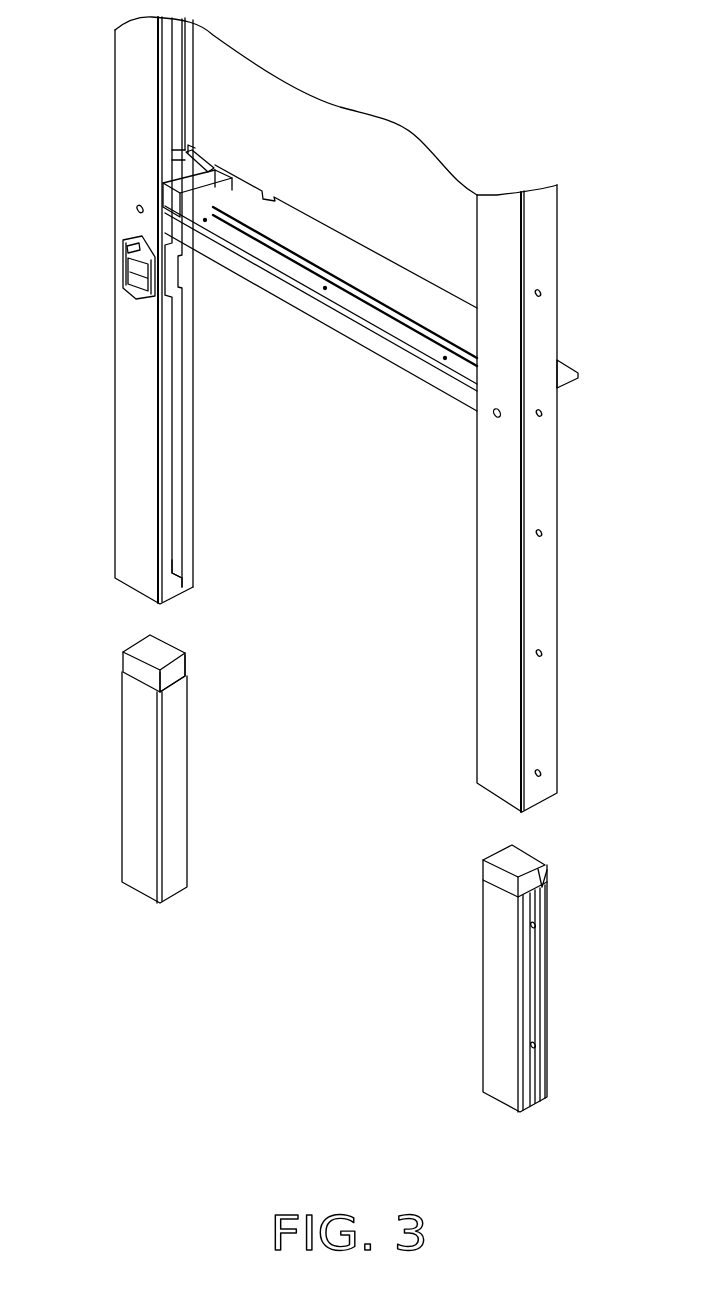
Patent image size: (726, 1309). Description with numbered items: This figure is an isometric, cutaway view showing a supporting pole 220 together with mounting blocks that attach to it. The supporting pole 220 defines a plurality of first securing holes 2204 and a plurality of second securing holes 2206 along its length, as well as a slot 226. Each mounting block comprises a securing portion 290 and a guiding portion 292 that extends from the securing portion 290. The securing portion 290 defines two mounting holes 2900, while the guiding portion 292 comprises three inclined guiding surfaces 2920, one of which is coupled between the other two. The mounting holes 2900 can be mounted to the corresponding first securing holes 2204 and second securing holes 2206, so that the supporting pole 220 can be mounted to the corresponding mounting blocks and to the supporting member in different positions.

The supporting pole 220 is at (545, 482).
The second securing hole 2206 is at (542, 652).
The first securing hole 2204 is at (541, 772).
The slot 226 is at (175, 589).
The securing portion 290 is at (175, 761).
The guiding portion 292 is at (147, 647).
The inclined guiding surface 2920 is at (177, 672).
The mounting hole 2900 is at (536, 1048).